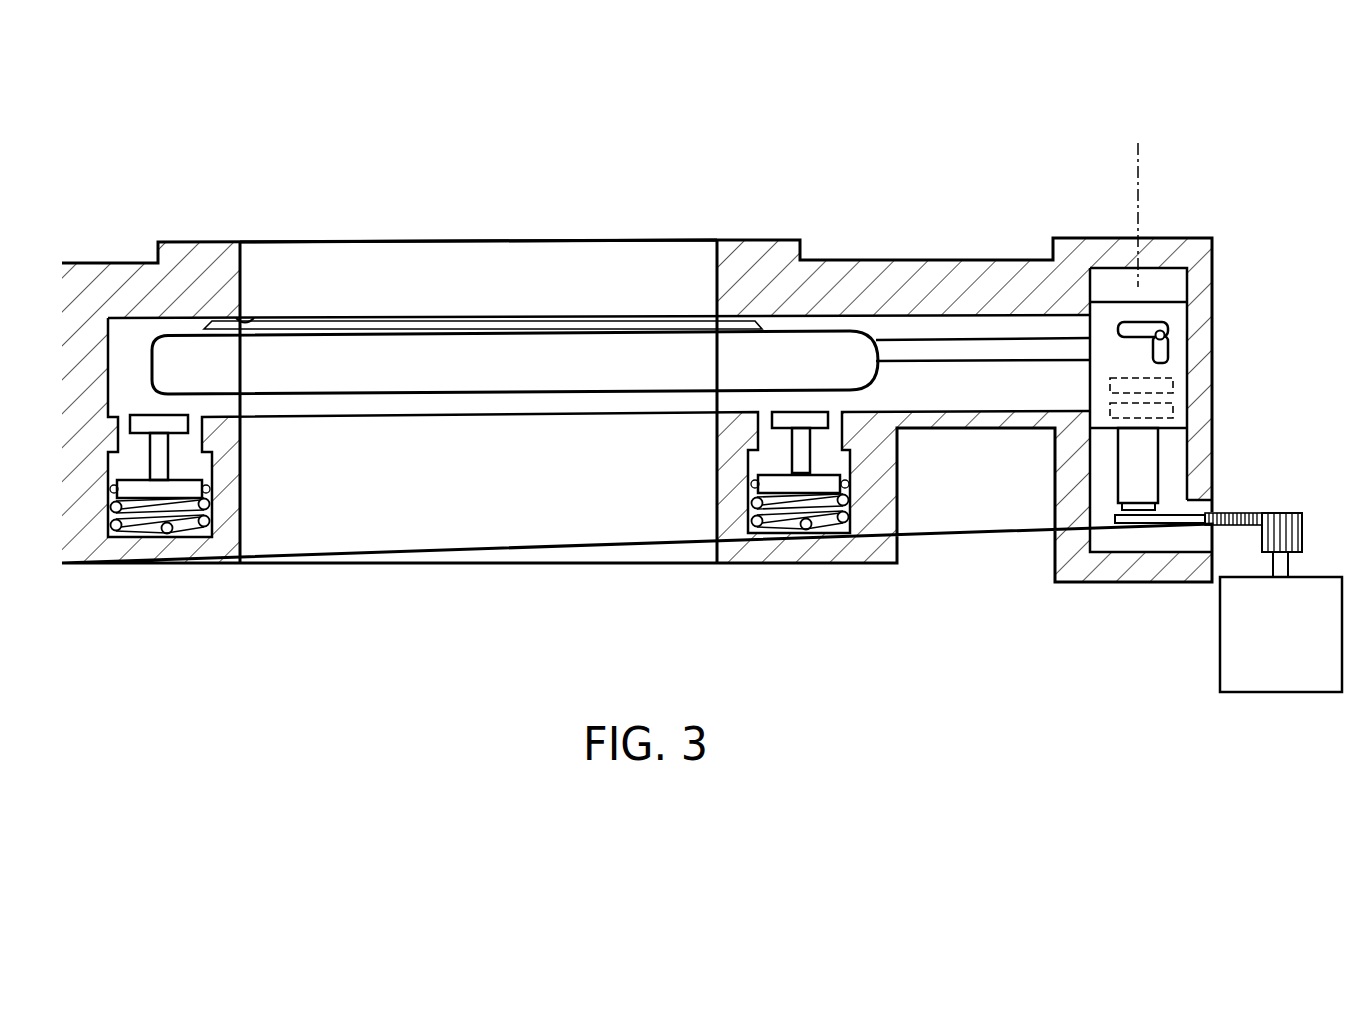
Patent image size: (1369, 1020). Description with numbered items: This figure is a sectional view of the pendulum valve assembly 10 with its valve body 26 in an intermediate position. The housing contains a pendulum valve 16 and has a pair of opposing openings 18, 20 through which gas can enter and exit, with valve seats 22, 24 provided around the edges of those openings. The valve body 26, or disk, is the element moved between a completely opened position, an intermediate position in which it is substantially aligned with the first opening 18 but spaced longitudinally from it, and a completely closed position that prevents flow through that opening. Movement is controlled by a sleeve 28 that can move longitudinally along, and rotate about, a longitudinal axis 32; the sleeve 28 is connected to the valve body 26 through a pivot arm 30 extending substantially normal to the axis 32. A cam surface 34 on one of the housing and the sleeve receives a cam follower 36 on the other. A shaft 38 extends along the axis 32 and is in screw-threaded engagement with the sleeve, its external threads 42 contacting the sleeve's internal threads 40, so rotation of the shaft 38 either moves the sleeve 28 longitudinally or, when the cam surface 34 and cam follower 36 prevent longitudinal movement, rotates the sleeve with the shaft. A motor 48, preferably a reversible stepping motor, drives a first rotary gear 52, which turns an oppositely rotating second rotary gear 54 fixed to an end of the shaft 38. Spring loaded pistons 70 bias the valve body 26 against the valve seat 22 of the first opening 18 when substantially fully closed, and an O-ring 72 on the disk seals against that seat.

The pendulum valve assembly 10 is at (614, 132).
The pendulum valve 16 is at (598, 402).
The first opening 18 is at (243, 246).
The second opening 20 is at (243, 537).
The valve seat 22 is at (253, 316).
The valve seat 24 is at (224, 411).
The valve body 26 is at (462, 395).
The sleeve 28 is at (1088, 382).
The pivot arm 30 is at (922, 364).
The longitudinal axis 32 is at (1140, 172).
The cam surface 34 is at (1175, 345).
The cam follower 36 is at (1168, 331).
The shaft 38 is at (1160, 440).
The internal threads 40 is at (1210, 383).
The external threads 42 is at (1210, 408).
The motor 48 is at (1220, 643).
The first rotary gear 52 is at (1305, 533).
The second rotary gear 54 is at (1240, 512).
The spring loaded pistons 70 is at (150, 464).
The O-ring 72 is at (473, 318).